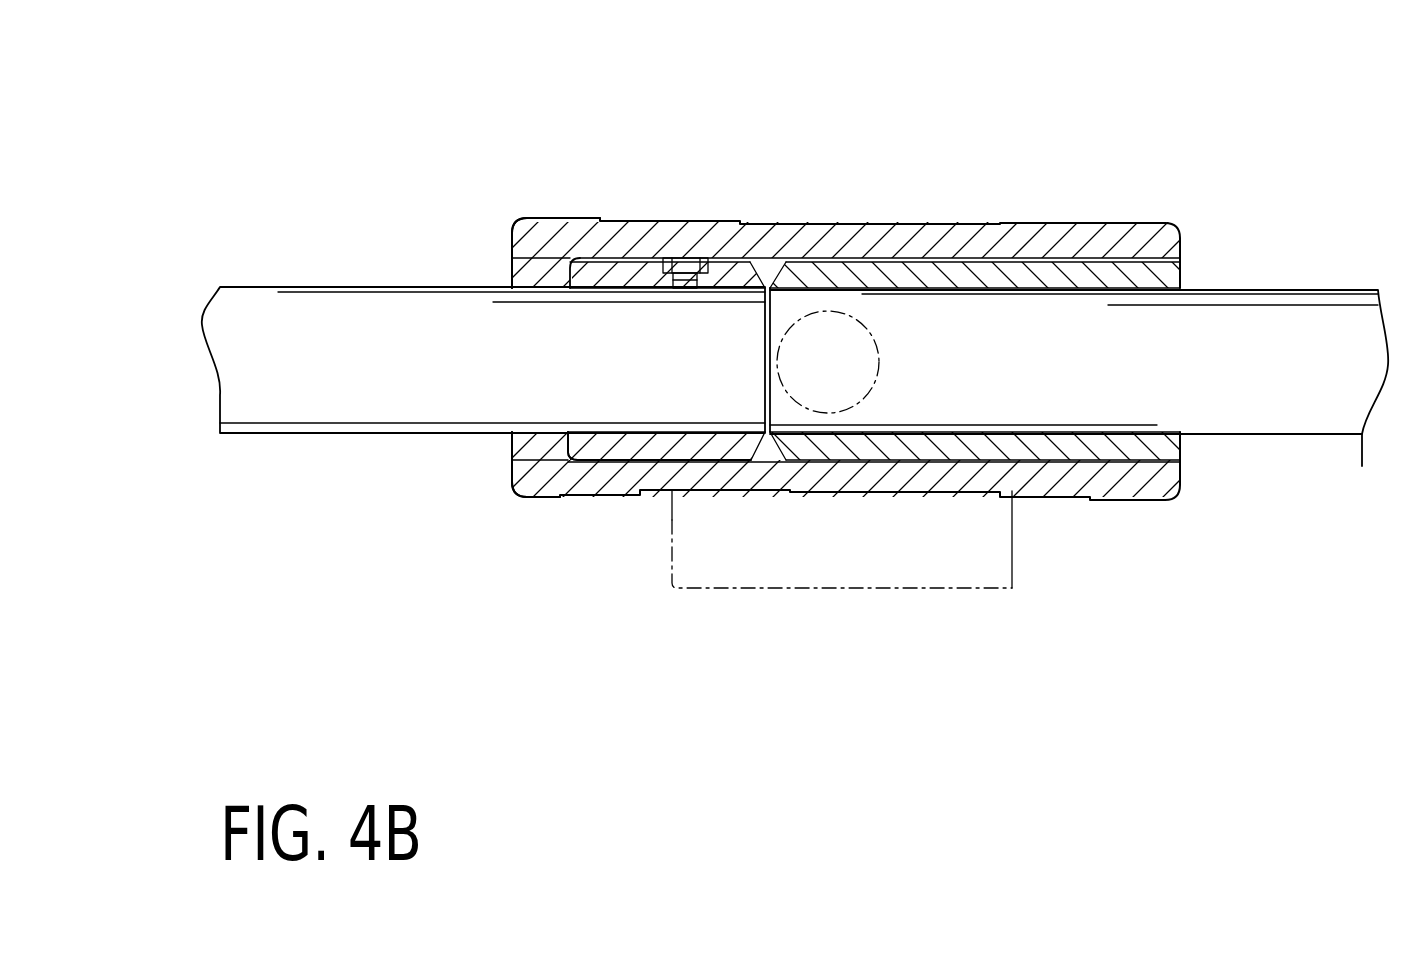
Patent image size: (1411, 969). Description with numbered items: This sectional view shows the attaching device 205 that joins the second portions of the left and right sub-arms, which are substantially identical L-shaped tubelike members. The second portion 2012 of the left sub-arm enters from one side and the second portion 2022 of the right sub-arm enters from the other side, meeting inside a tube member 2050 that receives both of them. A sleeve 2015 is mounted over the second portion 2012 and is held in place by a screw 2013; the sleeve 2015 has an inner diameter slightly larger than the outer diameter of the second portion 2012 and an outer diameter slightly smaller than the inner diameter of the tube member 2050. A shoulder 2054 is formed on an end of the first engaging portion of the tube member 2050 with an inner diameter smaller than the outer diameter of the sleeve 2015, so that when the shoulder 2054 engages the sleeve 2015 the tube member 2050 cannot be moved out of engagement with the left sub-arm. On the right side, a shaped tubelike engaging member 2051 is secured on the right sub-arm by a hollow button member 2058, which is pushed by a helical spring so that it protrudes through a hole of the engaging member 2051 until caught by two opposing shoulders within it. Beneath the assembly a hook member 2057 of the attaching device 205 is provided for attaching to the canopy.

The attaching device 205 is at (598, 206).
The shoulder 2054 is at (538, 278).
The engaging member 2051 is at (992, 273).
The tube member 2050 is at (1117, 492).
The sleeve 2015 is at (603, 450).
The screw 2013 is at (692, 266).
The second portion of left sub-arm 2012 is at (360, 398).
The second portion of right sub-arm 2022 is at (1288, 417).
The button member 2058 is at (835, 390).
The hook member 2057 is at (947, 560).